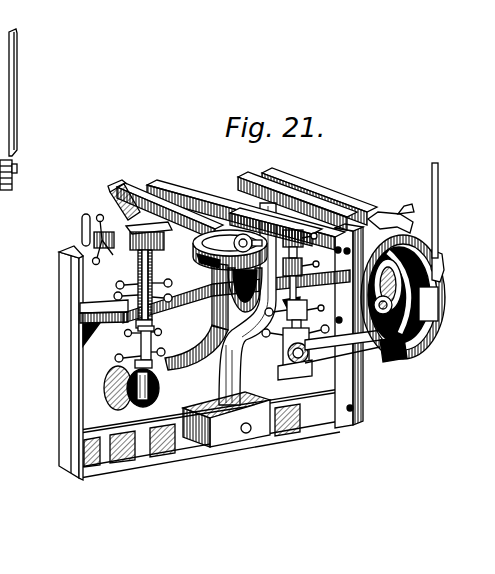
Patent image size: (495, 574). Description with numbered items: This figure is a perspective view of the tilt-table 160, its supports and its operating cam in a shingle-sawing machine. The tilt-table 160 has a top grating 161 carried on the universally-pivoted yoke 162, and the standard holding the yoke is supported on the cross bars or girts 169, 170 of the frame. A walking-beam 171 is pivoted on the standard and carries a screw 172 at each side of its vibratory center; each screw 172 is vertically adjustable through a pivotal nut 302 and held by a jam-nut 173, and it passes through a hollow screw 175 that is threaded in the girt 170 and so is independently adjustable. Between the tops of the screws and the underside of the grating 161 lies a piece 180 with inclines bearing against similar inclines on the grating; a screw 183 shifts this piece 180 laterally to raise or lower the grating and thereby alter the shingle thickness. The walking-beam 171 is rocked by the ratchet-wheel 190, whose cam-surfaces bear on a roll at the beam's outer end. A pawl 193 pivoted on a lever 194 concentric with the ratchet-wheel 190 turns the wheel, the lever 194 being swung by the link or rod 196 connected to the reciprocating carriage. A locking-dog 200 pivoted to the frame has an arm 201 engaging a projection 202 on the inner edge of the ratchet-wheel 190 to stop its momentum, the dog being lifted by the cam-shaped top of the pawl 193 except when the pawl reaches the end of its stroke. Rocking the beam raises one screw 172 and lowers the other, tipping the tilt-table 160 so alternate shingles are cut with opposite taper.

The tilt-table 160 is at (231, 225).
The top grating 161 is at (301, 186).
The yoke 162 is at (253, 313).
The cross bar or girt 169 is at (160, 458).
The cross bar or girt 170 is at (116, 285).
The walking-beam 171 is at (178, 368).
The screw 172 is at (136, 345).
The jam-nut 173 is at (112, 375).
The hollow screw 175 is at (156, 282).
The piece 180 is at (107, 248).
The screw 183 is at (82, 236).
The ratchet-wheel 190 is at (439, 310).
The pawl 193 is at (438, 243).
The lever 194 is at (441, 271).
The link or rod 196 is at (470, 226).
The locking-dog 200 is at (393, 218).
The arm 201 is at (390, 225).
The projection 202 is at (441, 292).
The pivotal nut 302 is at (309, 347).